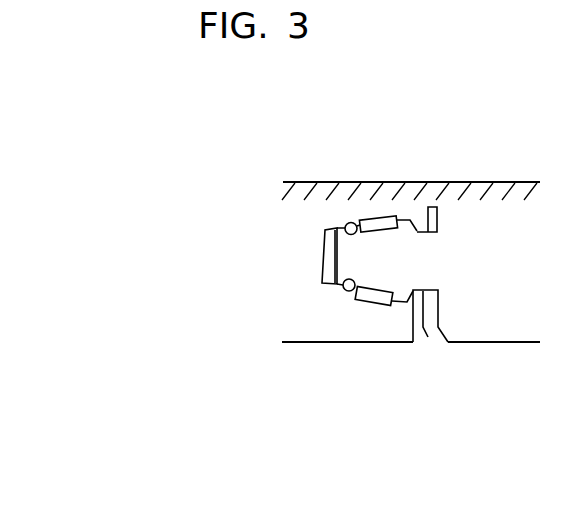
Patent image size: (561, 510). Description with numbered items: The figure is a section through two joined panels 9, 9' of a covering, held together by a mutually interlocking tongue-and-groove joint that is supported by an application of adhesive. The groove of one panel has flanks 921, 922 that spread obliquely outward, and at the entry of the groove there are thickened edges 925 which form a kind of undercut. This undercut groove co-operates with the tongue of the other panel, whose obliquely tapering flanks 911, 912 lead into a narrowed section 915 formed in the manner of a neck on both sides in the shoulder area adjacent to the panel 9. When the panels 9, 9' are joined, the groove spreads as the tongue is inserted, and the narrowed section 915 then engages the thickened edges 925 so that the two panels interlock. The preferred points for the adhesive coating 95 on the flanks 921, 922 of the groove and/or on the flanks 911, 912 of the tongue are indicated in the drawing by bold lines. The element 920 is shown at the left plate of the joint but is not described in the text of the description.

The panel 9 is at (411, 262).
The panel 9' is at (333, 319).
The adhesive coating 95 is at (401, 214).
The tongue flank 911 is at (347, 223).
The tongue flank 912 is at (345, 289).
The narrowed section 915 is at (417, 288).
The end plate 920 is at (323, 257).
The groove flank 921 is at (360, 219).
The groove flank 922 is at (351, 291).
The thickened edge 925 is at (421, 216).